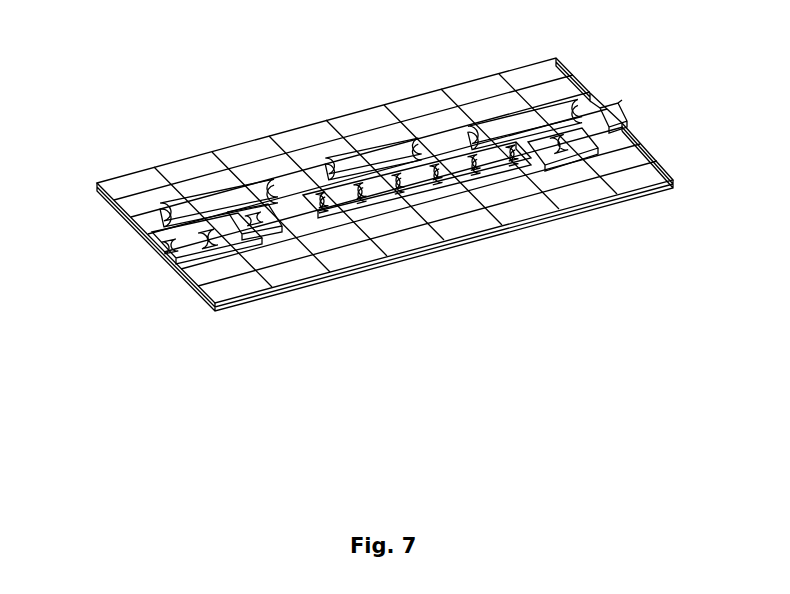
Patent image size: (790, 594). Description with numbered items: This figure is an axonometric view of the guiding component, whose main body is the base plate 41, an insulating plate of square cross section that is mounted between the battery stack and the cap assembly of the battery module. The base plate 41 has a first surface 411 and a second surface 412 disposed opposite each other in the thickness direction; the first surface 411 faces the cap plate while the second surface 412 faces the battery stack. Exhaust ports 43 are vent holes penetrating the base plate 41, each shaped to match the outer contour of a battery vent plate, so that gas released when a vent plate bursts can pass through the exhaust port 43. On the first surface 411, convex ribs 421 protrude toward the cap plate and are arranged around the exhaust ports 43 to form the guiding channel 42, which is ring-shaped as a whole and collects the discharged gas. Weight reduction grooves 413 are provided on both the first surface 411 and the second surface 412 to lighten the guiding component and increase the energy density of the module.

The base plate 41 is at (361, 236).
The first surface 411 is at (361, 180).
The second surface 412 is at (235, 325).
The weight reduction groove 413 is at (256, 152).
The convex ribs 421 is at (195, 198).
The guiding channel 42 is at (548, 118).
The exhaust port 43 is at (172, 266).